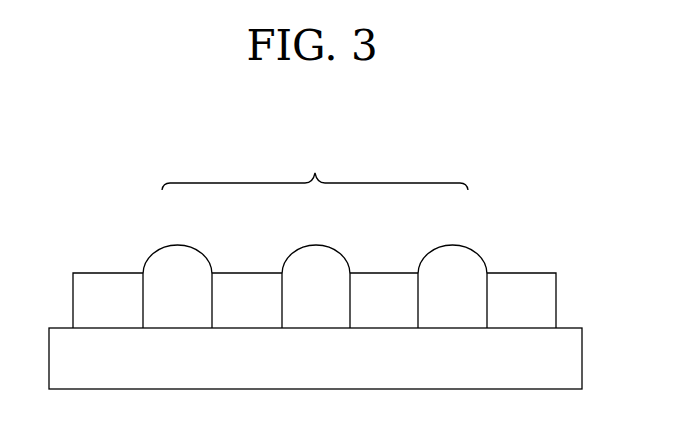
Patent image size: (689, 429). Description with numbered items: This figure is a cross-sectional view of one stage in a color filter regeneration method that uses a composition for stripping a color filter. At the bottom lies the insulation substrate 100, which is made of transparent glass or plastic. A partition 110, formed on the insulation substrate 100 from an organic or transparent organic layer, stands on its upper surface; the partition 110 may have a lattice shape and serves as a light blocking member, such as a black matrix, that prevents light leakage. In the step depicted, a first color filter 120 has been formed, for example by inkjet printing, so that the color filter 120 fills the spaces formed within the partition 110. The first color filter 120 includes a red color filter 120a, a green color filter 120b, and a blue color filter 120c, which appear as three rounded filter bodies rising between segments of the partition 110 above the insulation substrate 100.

The insulation substrate 100 is at (567, 357).
The partition 110 is at (544, 298).
The first color filter 120 is at (315, 166).
The red color filter 120a is at (177, 262).
The green color filter 120b is at (313, 262).
The blue color filter 120c is at (453, 262).